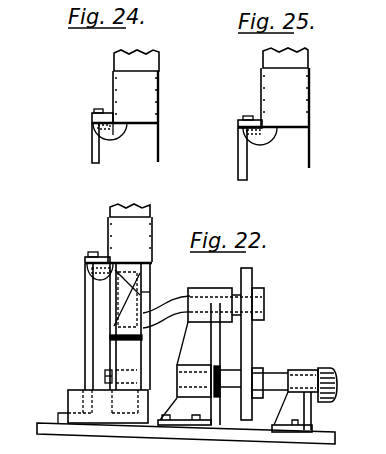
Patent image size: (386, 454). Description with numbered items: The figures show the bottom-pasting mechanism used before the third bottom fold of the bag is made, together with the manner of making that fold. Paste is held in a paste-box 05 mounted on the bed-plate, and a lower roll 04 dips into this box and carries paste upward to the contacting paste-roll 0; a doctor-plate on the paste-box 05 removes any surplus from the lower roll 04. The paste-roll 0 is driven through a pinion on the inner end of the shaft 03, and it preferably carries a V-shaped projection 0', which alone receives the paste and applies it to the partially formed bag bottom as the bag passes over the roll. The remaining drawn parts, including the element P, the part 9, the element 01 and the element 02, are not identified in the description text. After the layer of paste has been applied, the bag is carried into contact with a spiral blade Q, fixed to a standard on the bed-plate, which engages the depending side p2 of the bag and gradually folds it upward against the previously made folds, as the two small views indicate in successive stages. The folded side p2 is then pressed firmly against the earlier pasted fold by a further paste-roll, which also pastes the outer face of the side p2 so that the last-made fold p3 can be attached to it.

In FIG. 24, the bar or plate P is at (136, 60).
In FIG. 24, the spiral blade Q is at (110, 139).
In FIG. 24, the depending side of the bag p2 is at (117, 124).
In FIG. 25, the depending side of the bag p2 is at (285, 129).
In FIG. 24, the last-made fold p3 is at (158, 151).
In FIG. 25, the last-made fold p3 is at (309, 152).
In FIG. 24, the supporting leg 9 is at (92, 152).
In FIG. 22, the supporting leg 9 is at (85, 338).
In FIG. 22, the paste-roll 0 is at (230, 326).
In FIG. 22, the V-shaped projection 0' is at (175, 289).
In FIG. 22, the pin 01 is at (142, 294).
In FIG. 22, the cylinder 02 is at (225, 356).
In FIG. 22, the shaft 03 is at (238, 377).
In FIG. 22, the lower roll 04 is at (127, 326).
In FIG. 22, the paste-box 05 is at (68, 396).